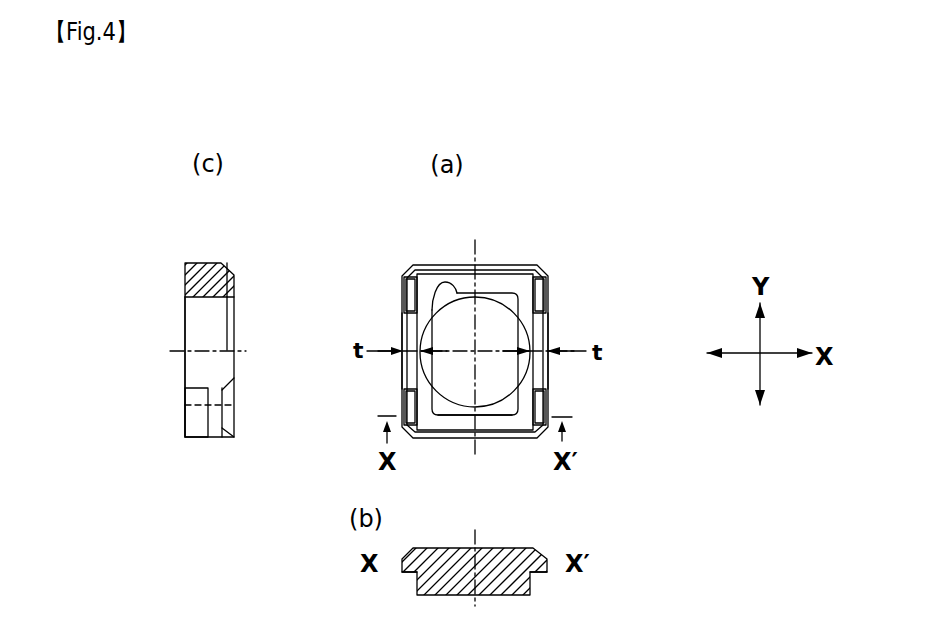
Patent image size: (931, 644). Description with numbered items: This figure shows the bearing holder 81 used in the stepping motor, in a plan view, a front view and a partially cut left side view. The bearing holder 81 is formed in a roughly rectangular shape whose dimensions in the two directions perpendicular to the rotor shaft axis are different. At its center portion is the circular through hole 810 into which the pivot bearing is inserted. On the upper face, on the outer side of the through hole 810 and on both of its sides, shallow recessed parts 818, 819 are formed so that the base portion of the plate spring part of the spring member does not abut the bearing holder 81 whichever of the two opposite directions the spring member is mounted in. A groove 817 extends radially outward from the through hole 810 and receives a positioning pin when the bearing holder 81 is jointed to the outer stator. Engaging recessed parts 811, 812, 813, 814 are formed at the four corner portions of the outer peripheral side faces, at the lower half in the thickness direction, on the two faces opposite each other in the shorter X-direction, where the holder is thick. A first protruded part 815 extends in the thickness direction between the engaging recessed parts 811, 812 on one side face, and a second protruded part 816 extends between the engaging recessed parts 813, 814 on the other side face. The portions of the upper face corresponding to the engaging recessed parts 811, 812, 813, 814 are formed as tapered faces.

The bearing holder 81 is at (493, 256).
The through hole 810 is at (530, 340).
The engaging recessed part 811 is at (390, 268).
The engaging recessed part 812 is at (400, 405).
The engaging recessed part 813 is at (550, 403).
The engaging recessed part 814 is at (552, 283).
The first protruded part 815 is at (403, 333).
The second protruded part 816 is at (546, 366).
The groove 817 is at (432, 288).
The recessed part 818 is at (506, 290).
The recessed part 819 is at (495, 410).